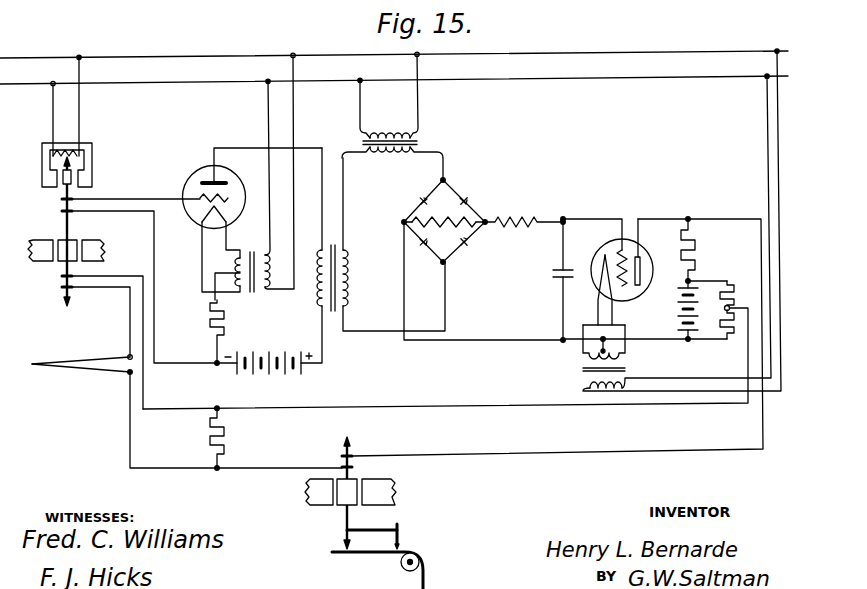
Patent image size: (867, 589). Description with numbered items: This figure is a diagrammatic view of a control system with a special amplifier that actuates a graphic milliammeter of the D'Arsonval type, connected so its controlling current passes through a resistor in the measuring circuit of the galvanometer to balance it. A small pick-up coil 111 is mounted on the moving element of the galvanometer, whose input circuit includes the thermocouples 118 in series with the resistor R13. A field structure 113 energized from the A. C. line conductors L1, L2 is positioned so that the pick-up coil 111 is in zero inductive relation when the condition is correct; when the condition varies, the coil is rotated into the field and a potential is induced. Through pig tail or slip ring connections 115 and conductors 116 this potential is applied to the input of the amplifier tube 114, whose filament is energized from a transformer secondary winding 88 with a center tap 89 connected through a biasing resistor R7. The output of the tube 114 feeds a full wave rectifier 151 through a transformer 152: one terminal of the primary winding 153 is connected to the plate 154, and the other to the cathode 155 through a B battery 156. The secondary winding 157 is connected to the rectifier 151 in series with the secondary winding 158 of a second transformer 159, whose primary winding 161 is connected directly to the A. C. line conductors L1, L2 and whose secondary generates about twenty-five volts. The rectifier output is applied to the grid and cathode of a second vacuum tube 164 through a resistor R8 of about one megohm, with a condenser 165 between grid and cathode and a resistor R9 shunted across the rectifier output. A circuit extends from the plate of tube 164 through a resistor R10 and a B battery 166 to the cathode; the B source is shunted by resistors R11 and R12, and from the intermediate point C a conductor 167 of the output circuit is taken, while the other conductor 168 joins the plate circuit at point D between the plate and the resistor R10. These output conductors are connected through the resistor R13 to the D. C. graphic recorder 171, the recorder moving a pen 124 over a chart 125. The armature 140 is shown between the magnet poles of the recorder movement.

The pick-up coil 111 is at (60, 188).
The field structure 113 is at (42, 157).
The amplifier tube 114 is at (193, 181).
The pig tail or slip ring connections 115 is at (62, 207).
The conductors 116 is at (150, 264).
The thermocouples 118 is at (79, 369).
The pen 124 is at (401, 537).
The chart 125 is at (430, 573).
The armature 140 is at (60, 264).
The full wave rectifier 151 is at (452, 214).
The transformer 152 is at (333, 313).
The primary winding 153 is at (320, 300).
The plate 154 is at (228, 187).
The cathode 155 is at (232, 212).
The B battery 156 is at (247, 361).
The secondary winding 157 is at (349, 278).
The secondary winding 158 is at (403, 159).
The second transformer 159 is at (420, 146).
The primary winding 161 is at (419, 122).
The second vacuum tube 164 is at (609, 247).
The condenser 165 is at (552, 276).
The B battery 166 is at (678, 313).
The conductor 167 is at (668, 405).
The conductor 168 is at (718, 219).
The D. C. graphic recorder 171 is at (353, 477).
The transformer secondary winding 88 is at (244, 257).
The center tap 89 is at (236, 270).
The biasing resistor R7 is at (223, 322).
The resistor R8 is at (524, 213).
The resistor R9 is at (428, 229).
The resistor R10 is at (692, 251).
The resistor R11 is at (724, 296).
The resistor R12 is at (730, 330).
The resistor R13 is at (223, 436).
The intermediate point C is at (724, 309).
The point D is at (687, 218).
The A. C. line conductor L1 is at (538, 50).
The A. C. line conductor L2 is at (538, 82).